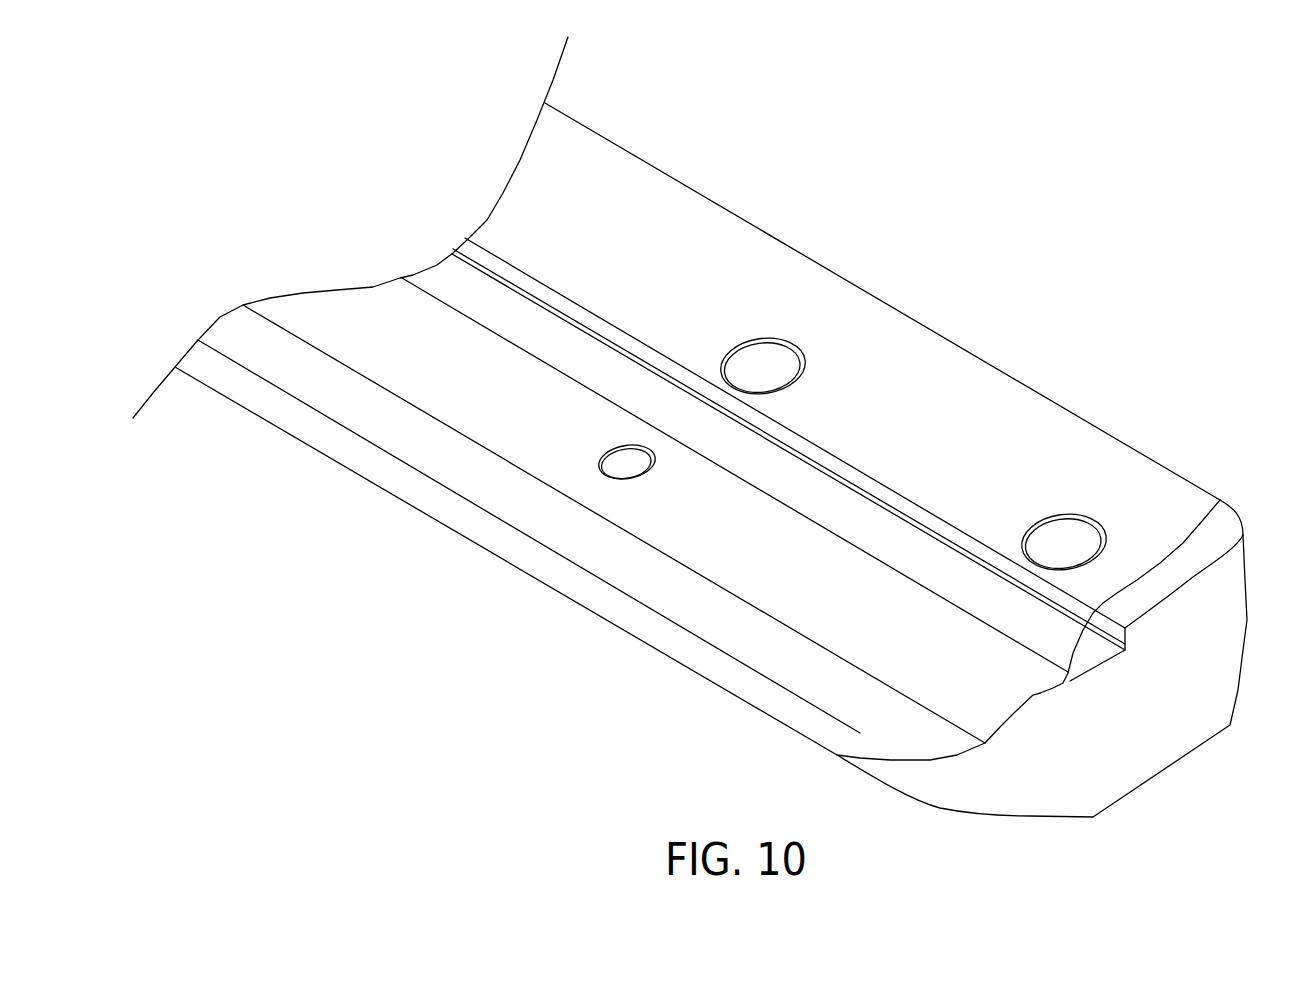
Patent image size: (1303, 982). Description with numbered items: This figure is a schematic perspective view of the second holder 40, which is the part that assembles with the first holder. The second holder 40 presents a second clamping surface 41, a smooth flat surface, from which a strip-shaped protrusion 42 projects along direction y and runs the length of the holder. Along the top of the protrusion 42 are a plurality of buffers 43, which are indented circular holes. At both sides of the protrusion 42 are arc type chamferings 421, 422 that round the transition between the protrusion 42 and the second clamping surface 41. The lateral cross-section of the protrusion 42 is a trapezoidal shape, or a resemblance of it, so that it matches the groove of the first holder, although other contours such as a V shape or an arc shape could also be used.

The second holder 40 is at (905, 214).
The second clamping surface 41 is at (1075, 680).
The strip-shaped protrusion 42 is at (1036, 718).
The arc type chamfering 421 is at (634, 592).
The arc type chamfering 422 is at (1220, 500).
The buffer 43 is at (622, 472).